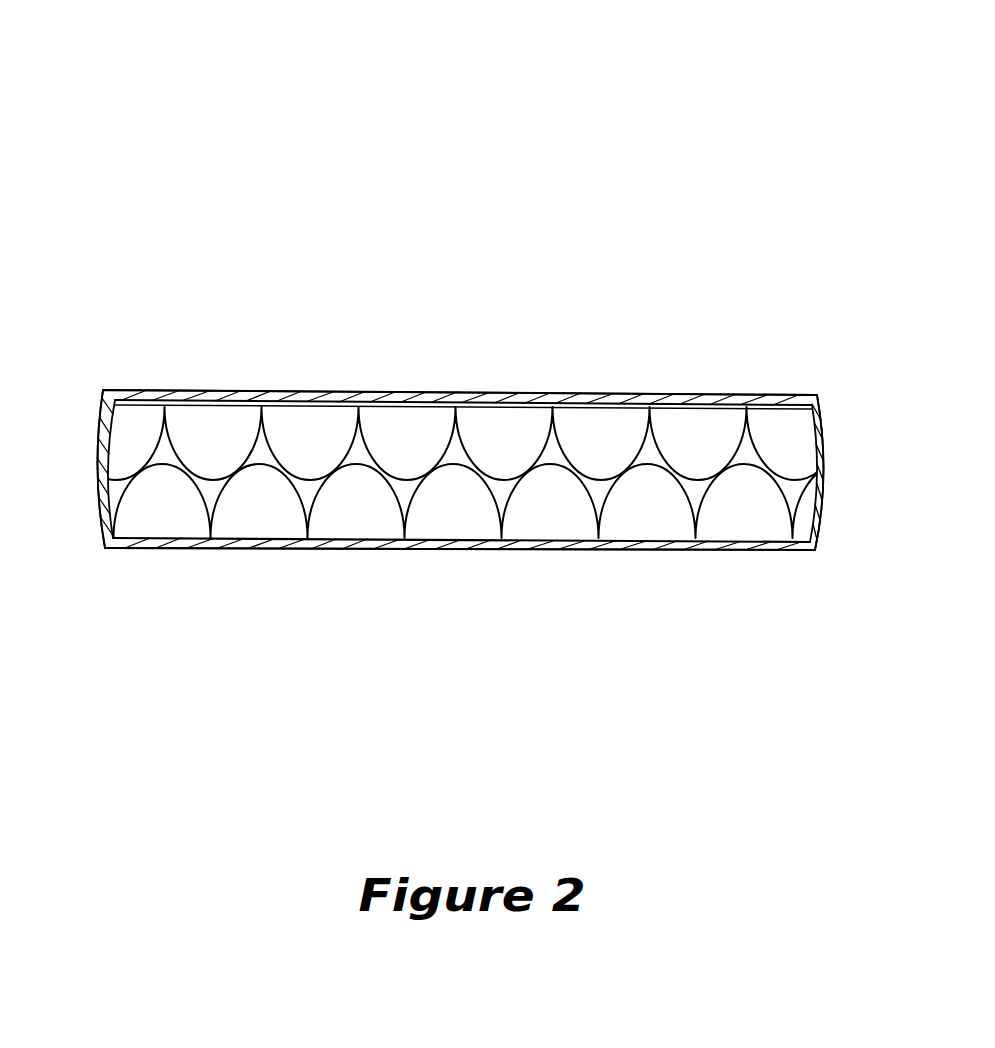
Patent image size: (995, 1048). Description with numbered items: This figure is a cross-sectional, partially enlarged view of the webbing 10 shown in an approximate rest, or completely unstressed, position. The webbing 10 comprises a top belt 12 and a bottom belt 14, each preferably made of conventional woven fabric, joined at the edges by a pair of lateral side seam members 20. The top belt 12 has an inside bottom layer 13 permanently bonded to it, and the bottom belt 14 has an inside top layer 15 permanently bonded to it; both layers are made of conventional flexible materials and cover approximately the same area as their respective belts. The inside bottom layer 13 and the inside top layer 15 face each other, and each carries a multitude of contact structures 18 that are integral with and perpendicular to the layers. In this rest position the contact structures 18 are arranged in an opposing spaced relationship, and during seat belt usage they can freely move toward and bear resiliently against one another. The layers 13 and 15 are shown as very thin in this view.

The webbing 10 is at (424, 88).
The top belt 12 is at (550, 395).
The inside bottom layer 13 is at (686, 423).
The bottom belt 14 is at (236, 549).
The inside top layer 15 is at (646, 527).
The contact structures 18 is at (208, 435).
The lateral side seam members 20 is at (97, 468).